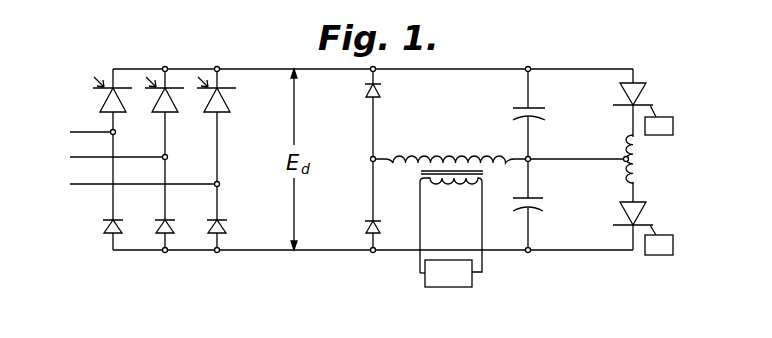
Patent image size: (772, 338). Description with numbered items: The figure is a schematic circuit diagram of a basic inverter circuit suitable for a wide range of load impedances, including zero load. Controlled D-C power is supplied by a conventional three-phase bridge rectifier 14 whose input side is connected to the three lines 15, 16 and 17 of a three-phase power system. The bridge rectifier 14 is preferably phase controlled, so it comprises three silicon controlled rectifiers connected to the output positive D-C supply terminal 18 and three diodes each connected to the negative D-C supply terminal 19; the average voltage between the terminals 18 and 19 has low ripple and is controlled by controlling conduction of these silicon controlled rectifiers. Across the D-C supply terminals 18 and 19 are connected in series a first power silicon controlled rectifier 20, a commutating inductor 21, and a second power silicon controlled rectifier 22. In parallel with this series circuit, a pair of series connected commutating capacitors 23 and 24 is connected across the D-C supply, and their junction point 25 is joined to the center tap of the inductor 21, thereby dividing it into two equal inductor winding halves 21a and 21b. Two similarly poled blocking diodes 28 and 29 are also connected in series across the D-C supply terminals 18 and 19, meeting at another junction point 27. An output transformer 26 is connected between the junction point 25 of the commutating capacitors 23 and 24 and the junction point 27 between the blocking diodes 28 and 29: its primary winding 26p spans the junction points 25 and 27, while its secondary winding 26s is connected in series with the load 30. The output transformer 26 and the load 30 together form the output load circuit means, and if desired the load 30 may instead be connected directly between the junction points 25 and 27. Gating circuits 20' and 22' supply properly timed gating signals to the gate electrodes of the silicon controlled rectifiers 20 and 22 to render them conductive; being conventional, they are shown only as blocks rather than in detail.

The three-phase bridge rectifier 14 is at (200, 153).
The three-phase power line 15 is at (90, 131).
The three-phase power line 16 is at (85, 157).
The three-phase power line 17 is at (80, 184).
The positive D-C supply terminal 18 is at (244, 68).
The negative D-C supply terminal 19 is at (245, 252).
The first power silicon controlled rectifier 20 is at (644, 102).
The gating circuit 20' is at (676, 120).
The commutating inductor 21 is at (640, 163).
The inductor winding half 21a is at (625, 136).
The inductor winding half 21b is at (623, 182).
The second power silicon controlled rectifier 22 is at (641, 216).
The gating circuit 22' is at (675, 240).
The commutating capacitor 23 is at (543, 108).
The commutating capacitor 24 is at (538, 198).
The junction point 25 is at (531, 160).
The output transformer 26 is at (413, 177).
The primary winding 26p is at (468, 155).
The secondary winding 26s is at (451, 225).
The junction point 27 is at (370, 159).
The blocking diode 28 is at (363, 88).
The blocking diode 29 is at (364, 229).
The load 30 is at (472, 282).